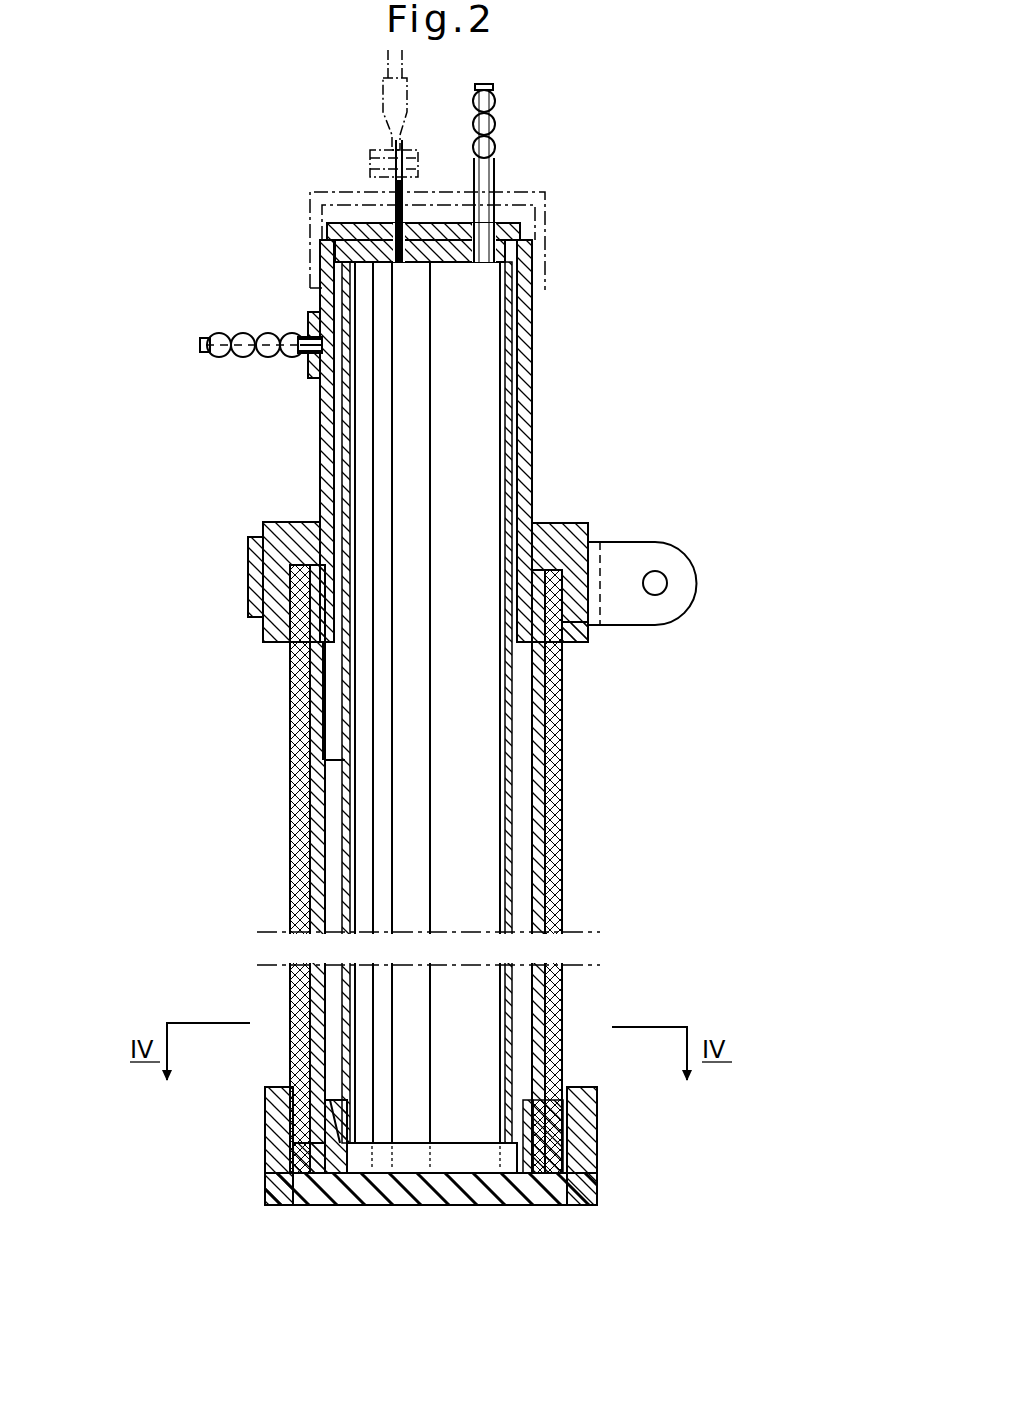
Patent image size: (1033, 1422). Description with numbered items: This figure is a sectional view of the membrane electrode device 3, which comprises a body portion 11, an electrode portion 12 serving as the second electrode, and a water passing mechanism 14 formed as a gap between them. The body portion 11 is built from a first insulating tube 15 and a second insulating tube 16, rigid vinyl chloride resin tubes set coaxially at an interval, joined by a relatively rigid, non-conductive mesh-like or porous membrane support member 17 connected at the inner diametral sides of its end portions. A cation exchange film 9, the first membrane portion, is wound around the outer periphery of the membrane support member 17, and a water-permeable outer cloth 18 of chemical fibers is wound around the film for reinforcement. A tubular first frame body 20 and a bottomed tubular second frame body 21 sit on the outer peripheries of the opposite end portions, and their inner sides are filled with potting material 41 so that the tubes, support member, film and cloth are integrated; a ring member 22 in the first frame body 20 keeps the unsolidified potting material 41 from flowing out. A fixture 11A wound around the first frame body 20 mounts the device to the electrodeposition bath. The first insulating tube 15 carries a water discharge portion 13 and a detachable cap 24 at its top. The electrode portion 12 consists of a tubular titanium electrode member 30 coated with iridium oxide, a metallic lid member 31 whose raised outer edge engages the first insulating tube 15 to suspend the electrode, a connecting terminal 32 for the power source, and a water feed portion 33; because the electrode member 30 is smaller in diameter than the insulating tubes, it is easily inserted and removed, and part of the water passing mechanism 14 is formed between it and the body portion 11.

The membrane electrode device 3 is at (582, 236).
The cation exchange film 9 is at (563, 815).
The body portion 11 is at (538, 332).
The fixture 11A is at (690, 545).
The electrode portion 12 is at (522, 430).
The water discharge portion 13 is at (242, 333).
The water passing mechanism 14 is at (357, 1185).
The first insulating tube 15 is at (320, 412).
The second insulating tube 16 is at (333, 1205).
The membrane support member 17 is at (530, 742).
The outer cloth 18 is at (565, 892).
The first frame body 20 is at (262, 522).
The second frame body 21 is at (270, 1140).
The ring member 22 is at (575, 645).
The cap 24 is at (332, 192).
The electrode member 30 is at (330, 758).
The metallic lid member 31 is at (520, 228).
The connecting terminal 32 is at (405, 235).
The water feed portion 33 is at (495, 205).
The potting material 41 is at (560, 523).